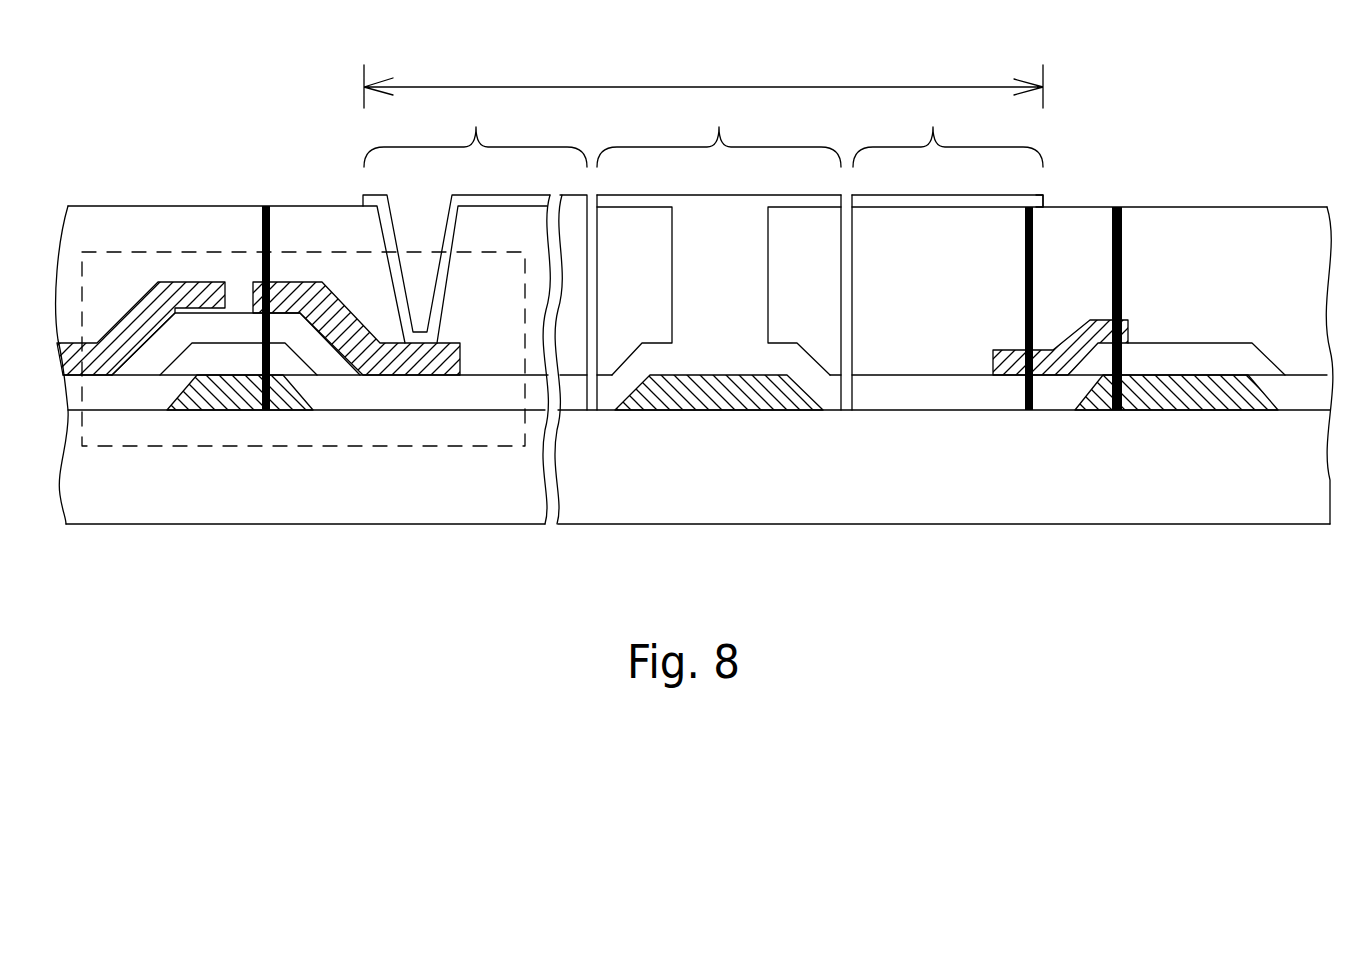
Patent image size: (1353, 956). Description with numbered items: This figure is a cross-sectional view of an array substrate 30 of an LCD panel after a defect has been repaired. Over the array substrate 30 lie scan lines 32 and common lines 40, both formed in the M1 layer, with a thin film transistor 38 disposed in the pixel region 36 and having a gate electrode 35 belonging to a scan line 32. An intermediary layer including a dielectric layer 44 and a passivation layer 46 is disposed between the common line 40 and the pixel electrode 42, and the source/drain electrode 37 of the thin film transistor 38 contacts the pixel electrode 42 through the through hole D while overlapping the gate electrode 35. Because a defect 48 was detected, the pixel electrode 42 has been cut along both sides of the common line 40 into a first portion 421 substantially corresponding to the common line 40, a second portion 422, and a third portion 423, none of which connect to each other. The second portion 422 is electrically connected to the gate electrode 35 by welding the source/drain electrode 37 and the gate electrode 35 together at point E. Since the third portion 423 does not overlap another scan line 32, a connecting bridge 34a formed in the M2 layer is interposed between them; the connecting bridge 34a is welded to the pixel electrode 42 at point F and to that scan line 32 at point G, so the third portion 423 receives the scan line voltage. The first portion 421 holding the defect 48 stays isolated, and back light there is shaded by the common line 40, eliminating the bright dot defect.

The array substrate 30 is at (912, 477).
The scan line 32 is at (1178, 410).
The connecting bridge 34a is at (1083, 340).
The gate electrode 35 is at (213, 400).
The pixel region 36 is at (703, 84).
The source/drain electrode 37 is at (307, 282).
The thin film transistor 38 is at (302, 447).
The common line 40 is at (725, 403).
The pixel electrode 42 is at (1040, 202).
The dielectric layer 44 is at (1180, 360).
The passivation layer 46 is at (952, 299).
The defect 48 is at (757, 260).
The first portion 421 is at (719, 133).
The second portion 422 is at (475, 133).
The third portion 423 is at (948, 133).